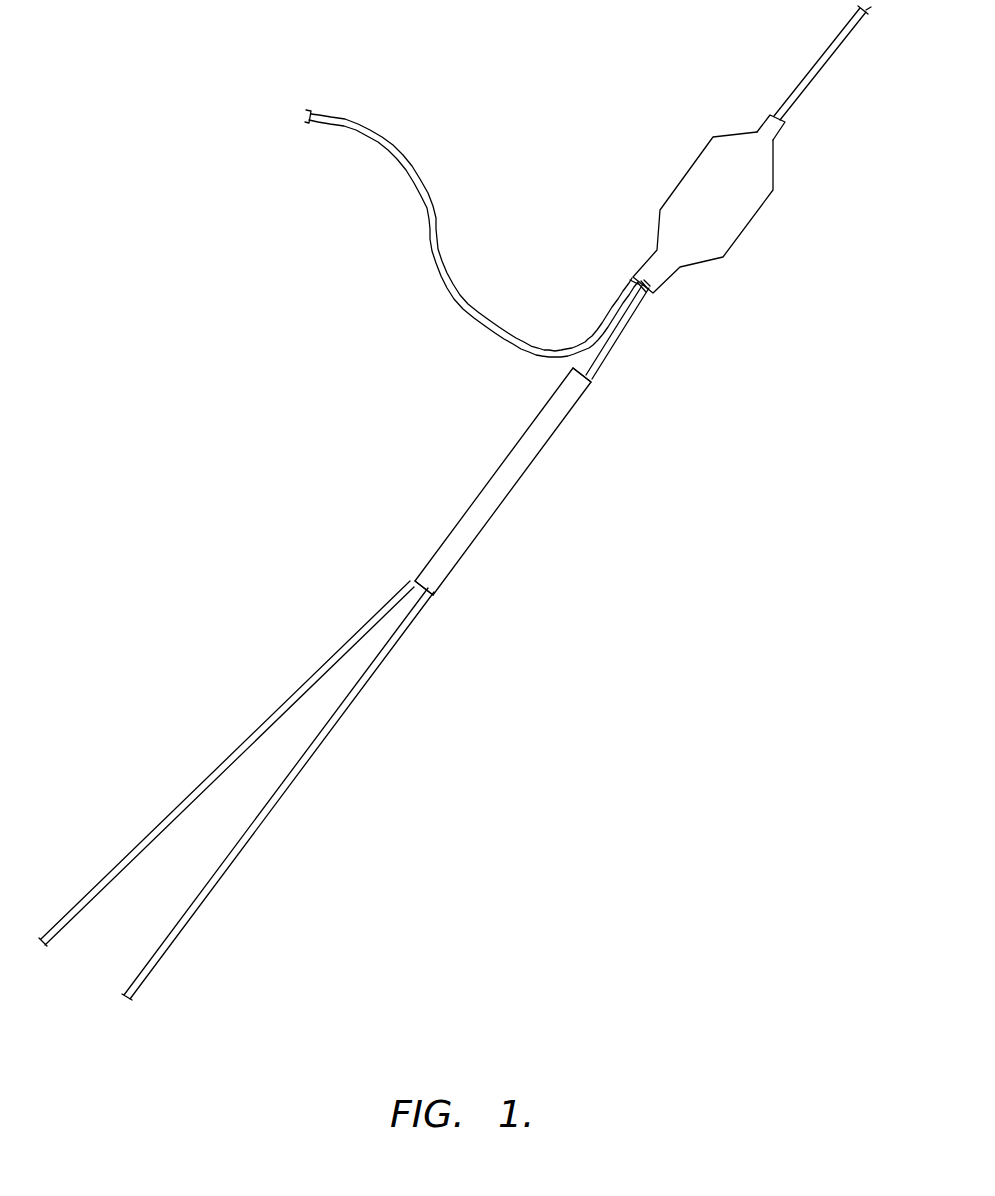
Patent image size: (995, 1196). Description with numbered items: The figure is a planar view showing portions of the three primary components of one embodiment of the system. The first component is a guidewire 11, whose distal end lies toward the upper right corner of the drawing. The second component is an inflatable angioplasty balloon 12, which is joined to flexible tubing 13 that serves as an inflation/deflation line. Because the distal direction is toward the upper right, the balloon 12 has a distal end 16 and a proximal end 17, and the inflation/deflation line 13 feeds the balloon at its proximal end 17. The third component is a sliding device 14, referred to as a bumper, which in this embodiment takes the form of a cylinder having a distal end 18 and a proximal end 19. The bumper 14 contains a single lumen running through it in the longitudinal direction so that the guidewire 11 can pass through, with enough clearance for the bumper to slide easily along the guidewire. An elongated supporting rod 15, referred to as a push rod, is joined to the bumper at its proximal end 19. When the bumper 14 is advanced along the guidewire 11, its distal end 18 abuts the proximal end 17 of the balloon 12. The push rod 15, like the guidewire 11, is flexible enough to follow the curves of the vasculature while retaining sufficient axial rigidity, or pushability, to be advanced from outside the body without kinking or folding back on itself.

The guidewire 11 is at (812, 83).
The inflatable angioplasty balloon 12 is at (751, 232).
The flexible tubing 13 is at (438, 193).
The sliding device 14 is at (534, 471).
The elongated supporting rod 15 is at (327, 656).
The distal end of the balloon 16 is at (780, 112).
The proximal end of the balloon 17 is at (622, 297).
The distal end of the bumper 18 is at (592, 382).
The proximal end of the bumper 19 is at (431, 595).